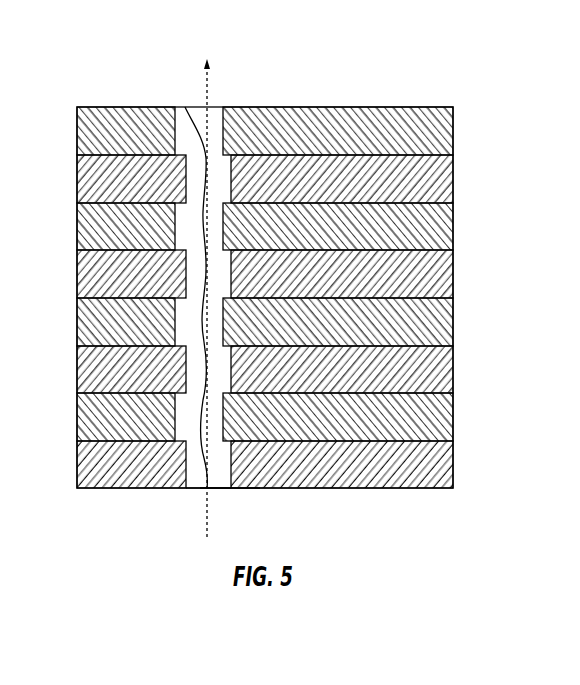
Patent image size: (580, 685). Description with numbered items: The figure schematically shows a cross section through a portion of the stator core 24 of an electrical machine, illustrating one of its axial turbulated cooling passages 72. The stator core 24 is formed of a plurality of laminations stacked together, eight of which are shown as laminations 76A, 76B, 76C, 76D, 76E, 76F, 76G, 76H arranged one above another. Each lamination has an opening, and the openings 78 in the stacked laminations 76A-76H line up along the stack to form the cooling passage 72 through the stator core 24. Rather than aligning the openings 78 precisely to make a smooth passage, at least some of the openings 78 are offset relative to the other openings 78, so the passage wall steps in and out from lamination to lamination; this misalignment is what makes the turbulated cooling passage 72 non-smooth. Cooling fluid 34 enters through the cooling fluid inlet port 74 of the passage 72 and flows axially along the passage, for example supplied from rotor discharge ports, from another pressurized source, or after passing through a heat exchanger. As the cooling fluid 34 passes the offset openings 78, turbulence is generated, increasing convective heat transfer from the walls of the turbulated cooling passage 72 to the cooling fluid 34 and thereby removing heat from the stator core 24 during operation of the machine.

The stator core 24 is at (456, 32).
The cooling fluid 34 is at (207, 93).
The turbulated cooling passages 72 is at (196, 470).
The cooling fluid inlet ports 74 is at (224, 500).
The lamination 76A is at (456, 133).
The lamination 76B is at (456, 180).
The lamination 76C is at (456, 227).
The lamination 76D is at (456, 275).
The lamination 76E is at (456, 325).
The lamination 76F is at (456, 372).
The lamination 76G is at (456, 418).
The lamination 76H is at (456, 465).
The openings 78 is at (186, 107).